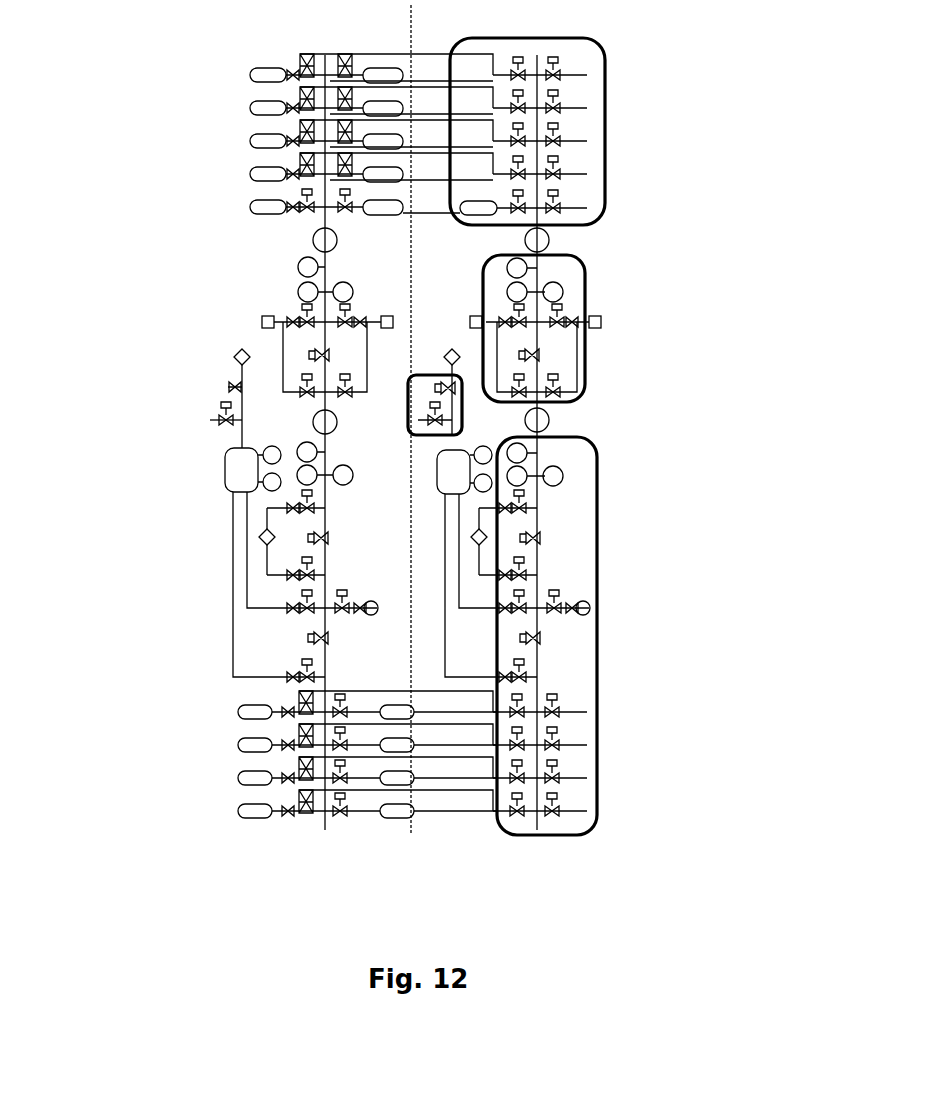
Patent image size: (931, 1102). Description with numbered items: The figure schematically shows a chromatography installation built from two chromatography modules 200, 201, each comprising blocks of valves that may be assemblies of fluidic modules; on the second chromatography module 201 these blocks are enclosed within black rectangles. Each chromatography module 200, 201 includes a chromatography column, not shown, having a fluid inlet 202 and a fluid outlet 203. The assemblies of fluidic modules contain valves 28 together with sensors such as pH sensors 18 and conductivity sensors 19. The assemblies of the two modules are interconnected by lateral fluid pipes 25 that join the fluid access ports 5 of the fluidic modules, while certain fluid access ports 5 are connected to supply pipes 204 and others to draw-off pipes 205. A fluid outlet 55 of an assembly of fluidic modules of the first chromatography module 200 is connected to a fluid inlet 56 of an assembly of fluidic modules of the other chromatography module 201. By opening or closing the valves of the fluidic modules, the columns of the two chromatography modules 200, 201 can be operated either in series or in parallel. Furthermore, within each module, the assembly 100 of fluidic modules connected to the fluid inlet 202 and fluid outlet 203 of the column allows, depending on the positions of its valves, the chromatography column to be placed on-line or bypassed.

The fluid access port 5 is at (578, 72).
The pH sensor 18 is at (507, 288).
The conductivity sensor 19 is at (565, 290).
The lateral fluid pipe 25 is at (398, 53).
The valve 28 is at (556, 174).
The fluid outlet 55 is at (294, 215).
The fluid inlet 56 is at (558, 603).
The assembly of fluidic modules 100 is at (603, 378).
The chromatography module 200 is at (196, 149).
The chromatography module 201 is at (512, 452).
The fluid inlet 202 is at (260, 322).
The fluid outlet 203 is at (388, 316).
The supply pipe 204 is at (250, 745).
The draw-off pipe 205 is at (270, 73).